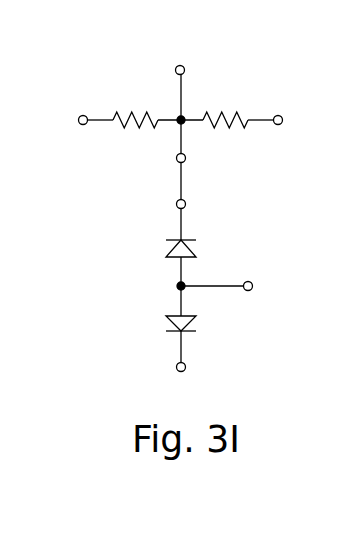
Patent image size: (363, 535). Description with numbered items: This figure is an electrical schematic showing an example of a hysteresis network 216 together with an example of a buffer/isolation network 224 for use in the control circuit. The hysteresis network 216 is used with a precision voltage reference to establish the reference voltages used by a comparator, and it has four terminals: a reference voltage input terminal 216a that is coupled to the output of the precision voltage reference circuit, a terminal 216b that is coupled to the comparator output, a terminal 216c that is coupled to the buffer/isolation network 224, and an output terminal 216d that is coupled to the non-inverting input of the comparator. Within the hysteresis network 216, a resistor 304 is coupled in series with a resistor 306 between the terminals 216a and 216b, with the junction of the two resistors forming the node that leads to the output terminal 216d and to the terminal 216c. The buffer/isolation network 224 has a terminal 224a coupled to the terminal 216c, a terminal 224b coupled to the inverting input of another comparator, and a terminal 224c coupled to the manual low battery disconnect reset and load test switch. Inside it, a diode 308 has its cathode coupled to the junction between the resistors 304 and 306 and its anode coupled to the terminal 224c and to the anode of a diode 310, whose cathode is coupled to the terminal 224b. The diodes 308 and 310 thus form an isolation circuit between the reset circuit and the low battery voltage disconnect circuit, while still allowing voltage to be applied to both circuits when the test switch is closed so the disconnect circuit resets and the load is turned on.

The hysteresis network 216 is at (210, 87).
The reference voltage input terminal 216a is at (86, 124).
The terminal 216b is at (282, 116).
The terminal 216c is at (184, 162).
The output terminal 216d is at (184, 66).
The resistor 304 is at (136, 112).
The resistor 306 is at (250, 100).
The buffer/isolation network 224 is at (113, 273).
The terminal 224a is at (184, 208).
The terminal 224b is at (184, 370).
The terminal 224c is at (250, 290).
The diode 308 is at (190, 254).
The diode 310 is at (186, 333).